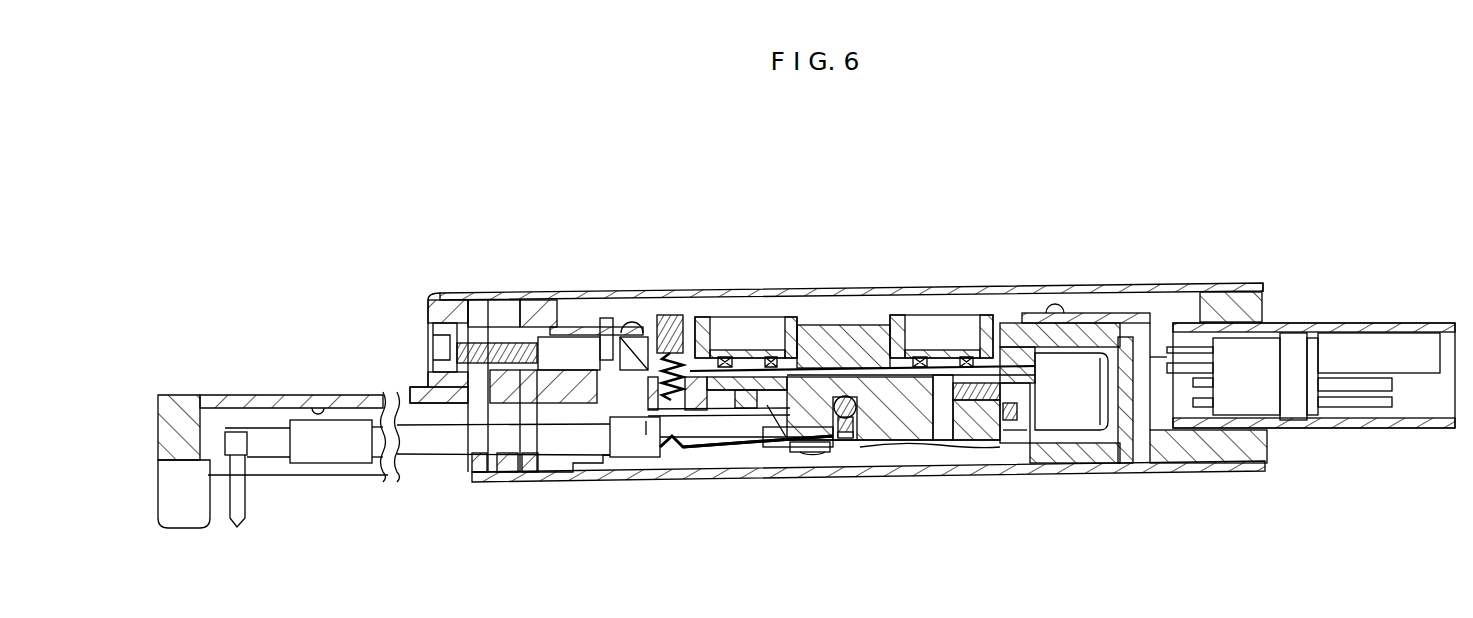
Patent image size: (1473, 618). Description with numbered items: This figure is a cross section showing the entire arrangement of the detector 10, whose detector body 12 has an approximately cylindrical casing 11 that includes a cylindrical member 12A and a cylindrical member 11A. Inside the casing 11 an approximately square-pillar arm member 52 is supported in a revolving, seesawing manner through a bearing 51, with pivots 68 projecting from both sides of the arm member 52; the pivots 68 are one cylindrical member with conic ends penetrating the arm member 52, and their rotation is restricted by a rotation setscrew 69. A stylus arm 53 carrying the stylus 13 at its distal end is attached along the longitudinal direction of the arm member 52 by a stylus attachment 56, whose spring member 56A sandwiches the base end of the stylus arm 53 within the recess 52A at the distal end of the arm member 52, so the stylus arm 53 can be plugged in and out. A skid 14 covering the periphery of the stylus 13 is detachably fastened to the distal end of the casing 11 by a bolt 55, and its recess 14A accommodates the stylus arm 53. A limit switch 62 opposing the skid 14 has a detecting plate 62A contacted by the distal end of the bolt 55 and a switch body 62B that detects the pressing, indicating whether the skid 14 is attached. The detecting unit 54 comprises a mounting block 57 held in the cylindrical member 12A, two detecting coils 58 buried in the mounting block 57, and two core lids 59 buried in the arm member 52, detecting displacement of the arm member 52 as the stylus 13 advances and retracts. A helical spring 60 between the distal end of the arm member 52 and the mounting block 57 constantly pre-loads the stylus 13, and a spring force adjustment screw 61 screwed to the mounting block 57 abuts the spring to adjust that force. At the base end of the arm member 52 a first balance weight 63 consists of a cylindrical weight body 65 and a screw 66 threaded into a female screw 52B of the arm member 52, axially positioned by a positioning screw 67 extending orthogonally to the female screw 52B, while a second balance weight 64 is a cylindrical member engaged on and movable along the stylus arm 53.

The detector 10 is at (1070, 262).
The casing 11 is at (933, 274).
The cylindrical member 11A is at (567, 482).
The detector body 12 is at (793, 278).
The cylindrical member 12A is at (762, 294).
The stylus 13 is at (243, 507).
The skid 14 is at (258, 398).
The recess 14A is at (320, 410).
The bearing 51 is at (902, 418).
The arm member 52 is at (920, 446).
The recess 52A is at (722, 430).
The female screw 52B is at (980, 406).
The stylus arm 53 is at (437, 446).
The detecting unit 54 is at (990, 318).
The bolt 55 is at (445, 352).
The stylus attachment 56 is at (679, 463).
The spring member 56A is at (700, 458).
The mounting block 57 is at (843, 340).
The detecting coils 58 is at (737, 357).
The core lids 59 is at (947, 378).
The helical spring 60 is at (647, 330).
The spring force adjustment screw 61 is at (676, 318).
The limit switch 62 is at (588, 216).
The detecting plate 62A is at (512, 333).
The switch body 62B is at (561, 343).
The first balance weight 63 is at (1135, 545).
The second balance weight 64 is at (347, 448).
The weight body 65 is at (1092, 406).
The screw 66 is at (1043, 400).
The positioning screw 67 is at (1013, 426).
The pivots 68 is at (868, 425).
The rotation setscrew 69 is at (843, 422).